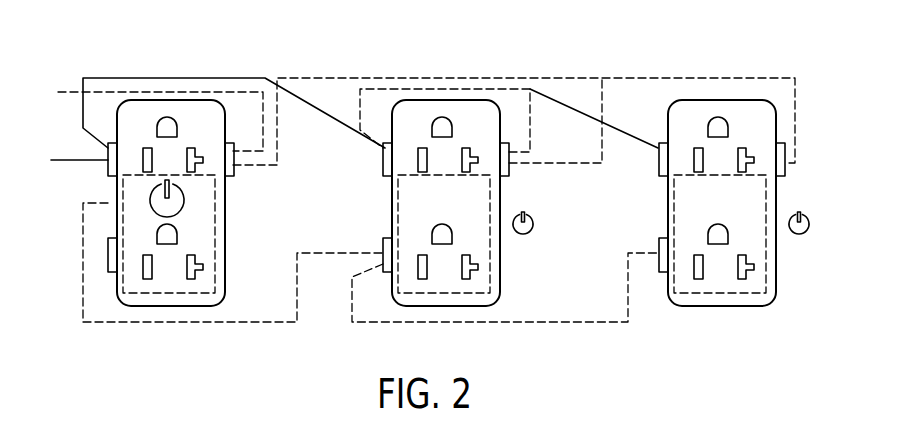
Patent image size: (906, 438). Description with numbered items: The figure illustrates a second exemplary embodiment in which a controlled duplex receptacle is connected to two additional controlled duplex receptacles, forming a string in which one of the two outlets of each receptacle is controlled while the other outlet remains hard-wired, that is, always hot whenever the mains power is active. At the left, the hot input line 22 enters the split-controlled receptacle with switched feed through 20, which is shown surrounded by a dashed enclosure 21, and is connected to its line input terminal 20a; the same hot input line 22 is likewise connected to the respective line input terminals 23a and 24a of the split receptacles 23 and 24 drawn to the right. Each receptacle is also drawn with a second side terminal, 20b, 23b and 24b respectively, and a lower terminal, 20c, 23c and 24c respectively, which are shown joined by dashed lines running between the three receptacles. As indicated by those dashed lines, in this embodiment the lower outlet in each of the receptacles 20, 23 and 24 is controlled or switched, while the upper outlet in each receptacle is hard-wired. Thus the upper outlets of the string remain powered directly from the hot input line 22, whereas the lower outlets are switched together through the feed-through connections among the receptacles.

The split-controlled receptacle with switched feed through 20 is at (168, 110).
The line input terminal 20a is at (108, 145).
The second connector of first receptacle device 20b is at (229, 177).
The third connector of first receptacle device 20c is at (108, 210).
The controller enclosure 21 is at (63, 91).
The hot input line 22 is at (58, 158).
The split receptacle 23 is at (443, 110).
The line input terminal 23a is at (385, 147).
The second connector of second receptacle device 23b is at (509, 146).
The third connector of second receptacle device 23c is at (385, 240).
The split receptacle 24 is at (719, 110).
The line input terminal 24a is at (660, 147).
The second connector of third receptacle device 24b is at (786, 146).
The third connector of third receptacle device 24c is at (660, 240).